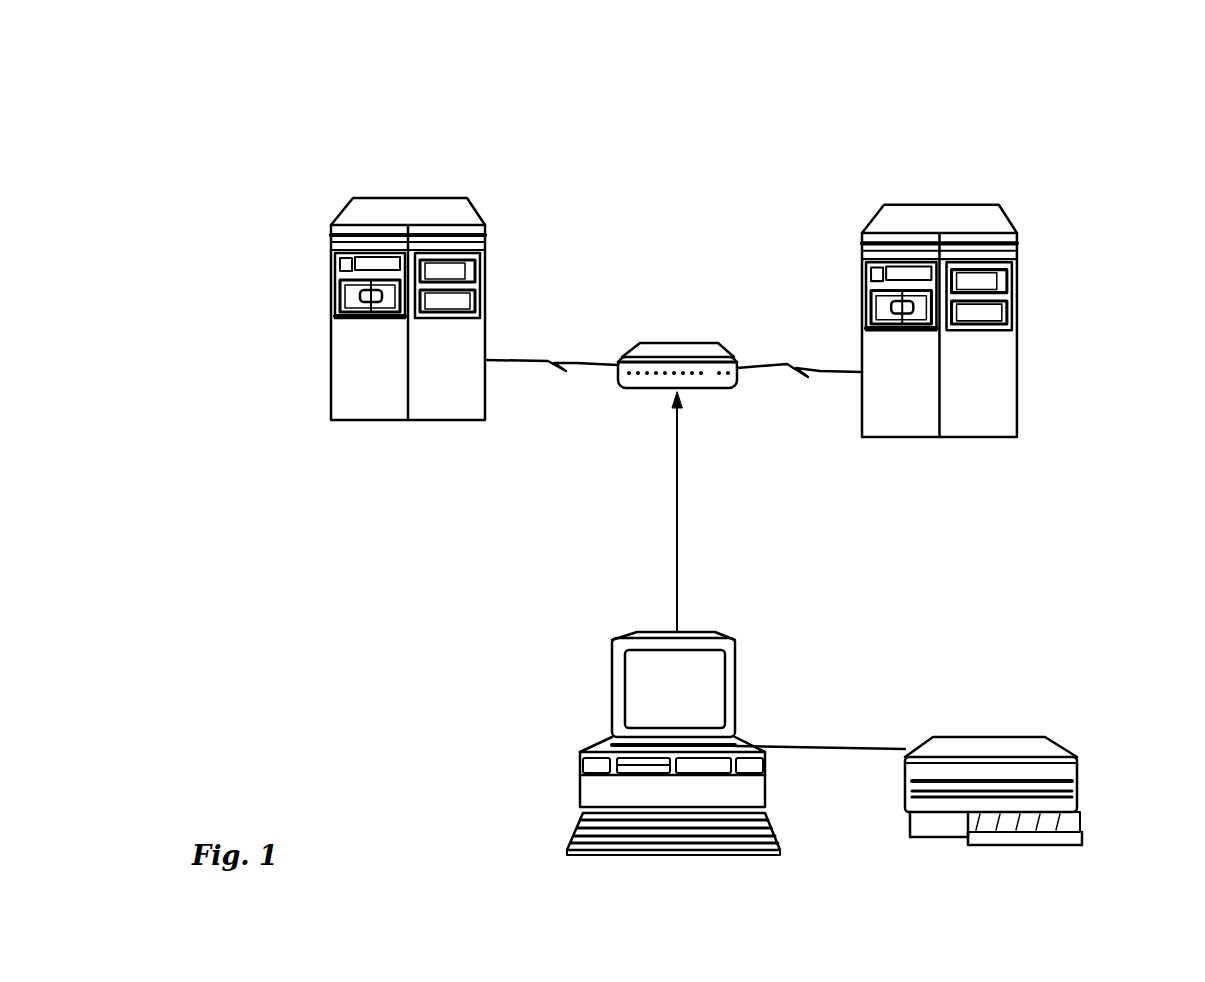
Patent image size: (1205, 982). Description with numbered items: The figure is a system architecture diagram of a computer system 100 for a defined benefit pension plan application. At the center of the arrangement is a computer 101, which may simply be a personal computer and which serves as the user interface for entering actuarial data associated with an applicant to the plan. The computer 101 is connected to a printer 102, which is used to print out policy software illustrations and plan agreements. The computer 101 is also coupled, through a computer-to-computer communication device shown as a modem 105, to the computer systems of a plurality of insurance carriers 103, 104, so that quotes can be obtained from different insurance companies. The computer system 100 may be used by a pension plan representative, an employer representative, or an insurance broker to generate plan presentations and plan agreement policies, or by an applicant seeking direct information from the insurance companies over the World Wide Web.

The computer system 100 is at (282, 93).
The computer 101 is at (612, 733).
The printer 102 is at (1077, 775).
The insurance carrier computer system 103 is at (1017, 250).
The insurance carrier computer system 104 is at (331, 300).
The modem 105 is at (687, 330).